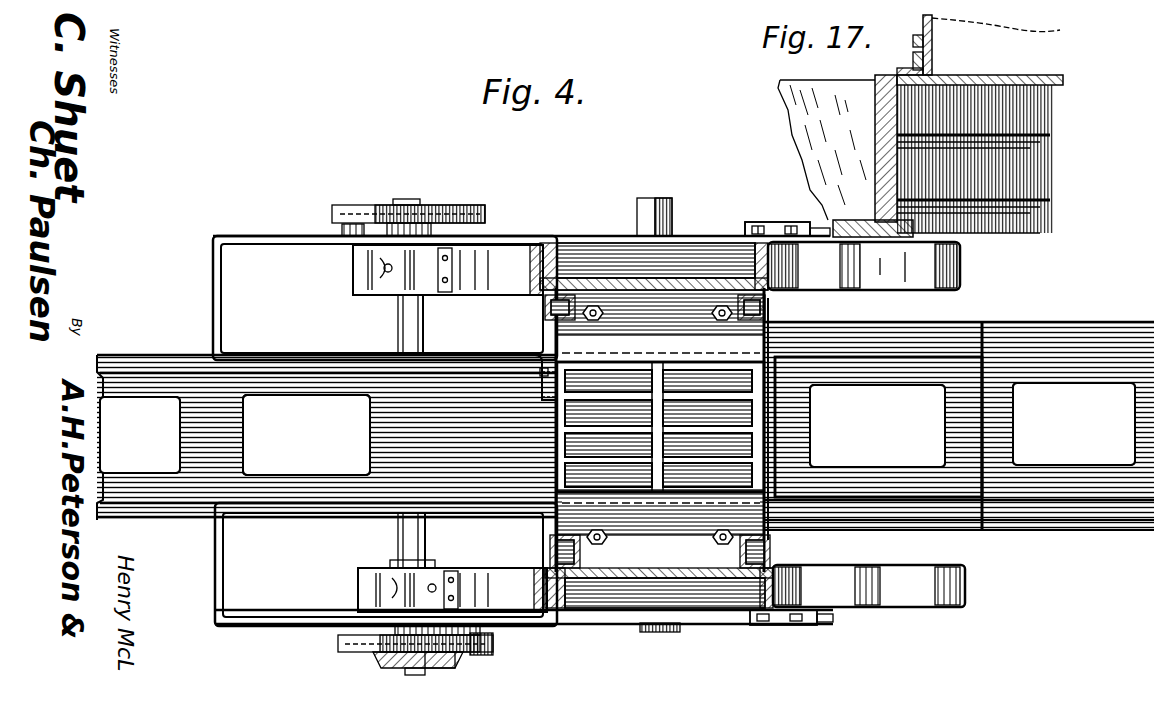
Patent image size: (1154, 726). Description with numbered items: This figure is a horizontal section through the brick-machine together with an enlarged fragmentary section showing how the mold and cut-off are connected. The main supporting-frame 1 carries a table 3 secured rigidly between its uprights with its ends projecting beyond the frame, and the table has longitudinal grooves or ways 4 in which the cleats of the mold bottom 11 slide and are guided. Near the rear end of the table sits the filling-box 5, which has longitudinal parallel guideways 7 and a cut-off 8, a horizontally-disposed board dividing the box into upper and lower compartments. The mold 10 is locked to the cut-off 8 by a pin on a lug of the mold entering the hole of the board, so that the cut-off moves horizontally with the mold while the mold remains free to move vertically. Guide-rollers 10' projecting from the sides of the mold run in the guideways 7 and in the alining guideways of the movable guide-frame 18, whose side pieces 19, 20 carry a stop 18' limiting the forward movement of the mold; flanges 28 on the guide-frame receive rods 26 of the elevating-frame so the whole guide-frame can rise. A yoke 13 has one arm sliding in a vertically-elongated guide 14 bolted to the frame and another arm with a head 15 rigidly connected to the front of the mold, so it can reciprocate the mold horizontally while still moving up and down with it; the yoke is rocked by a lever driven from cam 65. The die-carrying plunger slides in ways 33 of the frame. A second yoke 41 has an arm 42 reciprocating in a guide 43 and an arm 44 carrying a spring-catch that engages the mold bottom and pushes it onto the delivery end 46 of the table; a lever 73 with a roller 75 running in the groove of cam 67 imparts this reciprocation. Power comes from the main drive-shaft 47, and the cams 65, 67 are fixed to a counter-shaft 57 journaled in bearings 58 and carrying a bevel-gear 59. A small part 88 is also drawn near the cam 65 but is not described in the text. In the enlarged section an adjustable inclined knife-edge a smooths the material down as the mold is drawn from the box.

In FIG. 4, the main supporting-frame 1 is at (475, 268).
In FIG. 4, the table 3 is at (372, 440).
In FIG. 4, the longitudinal grooves or ways 4 is at (150, 485).
In FIG. 4, the filling-box 5 is at (838, 362).
In FIG. 17, the filling-box 5 is at (1020, 36).
In FIG. 17, the longitudinal parallel guideways 7 is at (1028, 155).
In FIG. 17, the cut-off 8 is at (1005, 80).
In FIG. 4, the mold 10 is at (670, 430).
In FIG. 17, the mold 10 is at (826, 139).
In FIG. 4, the guide-rollers 10' is at (661, 498).
In FIG. 17, the bottom of the mold 11 is at (872, 212).
In FIG. 4, the yoke 13 is at (218, 322).
In FIG. 4, the vertically-elongated guide 14 is at (775, 236).
In FIG. 17, the vertically-elongated guide 14 is at (777, 217).
In FIG. 4, the head 15 is at (515, 368).
In FIG. 4, the movable guide-frame 18 is at (641, 450).
In FIG. 4, the stop 18' is at (577, 455).
In FIG. 4, the side piece 19 is at (680, 291).
In FIG. 4, the side piece 20 is at (683, 600).
In FIG. 4, the rods 26 is at (555, 259).
In FIG. 4, the flanges 28 is at (600, 267).
In FIG. 4, the ways 33 is at (642, 255).
In FIG. 4, the yoke 41 is at (222, 578).
In FIG. 4, the arm 42 is at (545, 618).
In FIG. 4, the guide 43 is at (785, 620).
In FIG. 4, the arm 44 is at (460, 505).
In FIG. 4, the forward or delivery end of the table 46 is at (306, 435).
In FIG. 4, the main drive-shaft 47 is at (660, 210).
In FIG. 4, the counter-shaft 57 is at (397, 325).
In FIG. 4, the bearings 58 is at (395, 270).
In FIG. 4, the bevel-gear 59 is at (418, 672).
In FIG. 4, the cam 65 is at (445, 210).
In FIG. 4, the cam 67 is at (362, 654).
In FIG. 4, the lever 73 is at (466, 656).
In FIG. 4, the roller 75 is at (485, 652).
In FIG. 4, the pawl 88 is at (345, 230).
In FIG. 17, the inclined knife-edge a is at (924, 20).